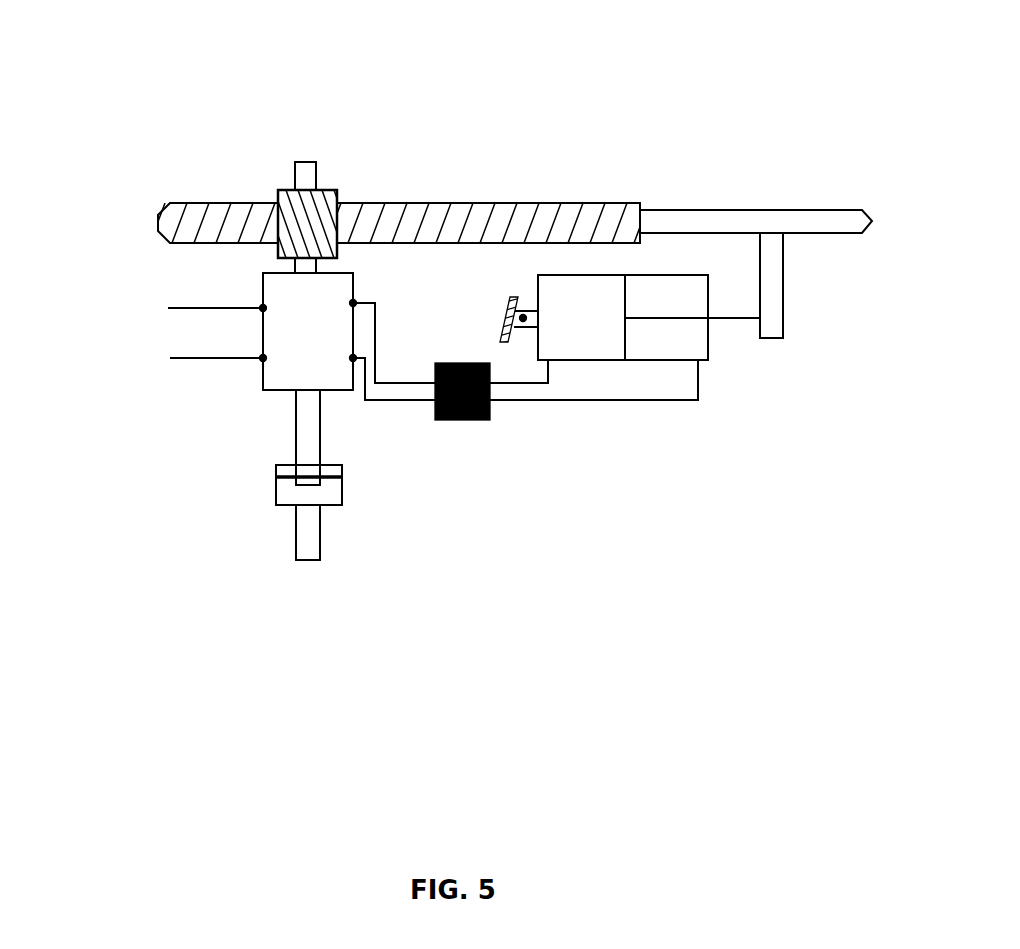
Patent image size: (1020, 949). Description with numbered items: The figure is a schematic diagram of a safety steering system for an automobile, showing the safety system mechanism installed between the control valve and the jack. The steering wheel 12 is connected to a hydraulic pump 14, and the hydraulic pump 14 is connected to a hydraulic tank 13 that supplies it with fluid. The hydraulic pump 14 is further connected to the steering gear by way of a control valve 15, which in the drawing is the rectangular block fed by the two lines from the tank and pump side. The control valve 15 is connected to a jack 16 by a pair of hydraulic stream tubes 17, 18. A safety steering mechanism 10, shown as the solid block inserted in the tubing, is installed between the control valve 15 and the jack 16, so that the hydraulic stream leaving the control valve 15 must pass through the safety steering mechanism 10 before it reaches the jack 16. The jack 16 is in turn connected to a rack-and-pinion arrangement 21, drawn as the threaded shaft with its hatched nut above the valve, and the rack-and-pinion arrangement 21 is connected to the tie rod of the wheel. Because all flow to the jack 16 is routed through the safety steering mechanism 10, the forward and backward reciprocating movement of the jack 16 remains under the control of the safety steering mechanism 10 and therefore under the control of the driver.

The safety steering mechanism 10 is at (470, 420).
The steering wheel 12 is at (310, 550).
The hydraulic tank 13 is at (195, 303).
The hydraulic pump 14 is at (190, 365).
The control valve 15 is at (290, 372).
The jack 16 is at (650, 310).
The hydraulic stream tube 17 is at (548, 380).
The hydraulic stream tube 18 is at (700, 378).
The rack-and-pinion arrangement 21 is at (354, 186).